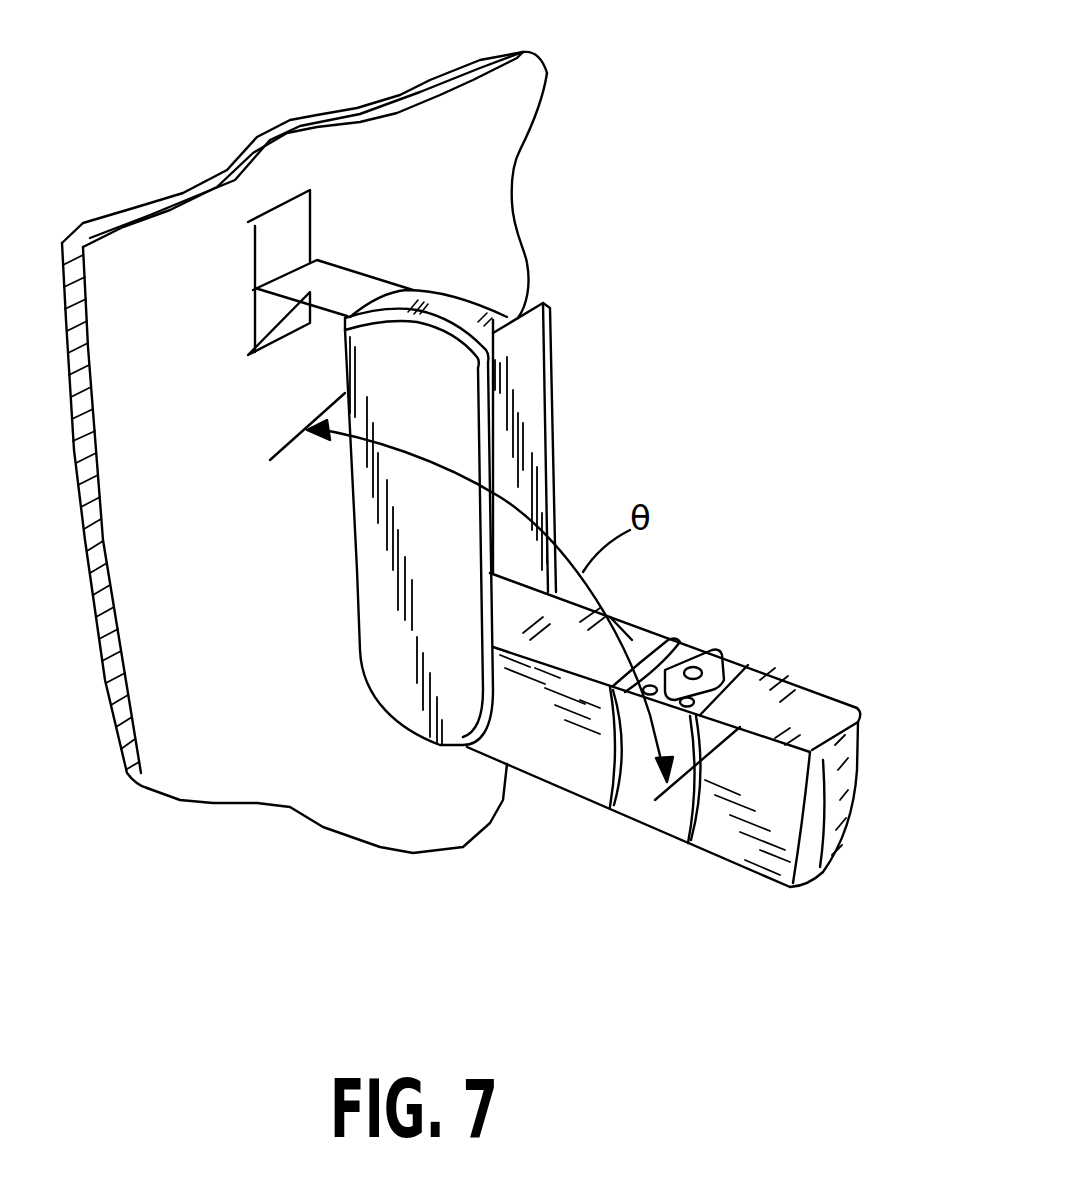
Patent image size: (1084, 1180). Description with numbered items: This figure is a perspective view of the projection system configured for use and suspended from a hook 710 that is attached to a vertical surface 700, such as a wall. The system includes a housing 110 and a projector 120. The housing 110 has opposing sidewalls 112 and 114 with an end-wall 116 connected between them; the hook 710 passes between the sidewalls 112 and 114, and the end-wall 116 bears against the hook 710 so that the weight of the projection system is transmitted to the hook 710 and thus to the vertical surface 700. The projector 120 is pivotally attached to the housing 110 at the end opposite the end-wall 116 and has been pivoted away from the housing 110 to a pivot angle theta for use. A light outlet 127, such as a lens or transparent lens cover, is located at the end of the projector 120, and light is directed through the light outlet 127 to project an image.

The vertical surface 700 is at (527, 110).
The hook 710 is at (343, 287).
The housing 110 is at (473, 477).
The sidewall 112 is at (437, 497).
The sidewall 114 is at (555, 447).
The end-wall 116 is at (453, 313).
The projector 120 is at (712, 709).
The light outlet 127 is at (843, 793).